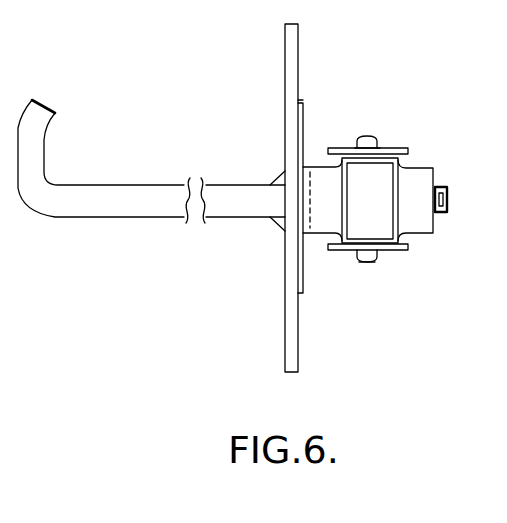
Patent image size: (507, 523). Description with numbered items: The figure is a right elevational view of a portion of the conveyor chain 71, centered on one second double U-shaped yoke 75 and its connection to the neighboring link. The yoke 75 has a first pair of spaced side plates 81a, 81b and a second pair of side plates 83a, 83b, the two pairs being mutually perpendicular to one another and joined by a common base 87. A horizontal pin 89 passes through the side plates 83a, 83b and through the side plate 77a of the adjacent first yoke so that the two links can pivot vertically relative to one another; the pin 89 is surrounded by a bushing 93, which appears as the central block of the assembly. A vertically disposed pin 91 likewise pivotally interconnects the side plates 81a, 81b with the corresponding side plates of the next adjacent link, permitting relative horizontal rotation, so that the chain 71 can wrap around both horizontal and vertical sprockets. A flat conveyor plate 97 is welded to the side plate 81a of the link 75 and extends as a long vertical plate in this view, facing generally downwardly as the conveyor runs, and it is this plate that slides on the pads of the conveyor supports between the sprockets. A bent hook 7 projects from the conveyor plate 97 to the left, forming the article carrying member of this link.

The hook 7 is at (56, 113).
The conveyor plate 97 is at (284, 371).
The side plate 81a is at (306, 265).
The side plate 77a is at (305, 103).
The common base 87 is at (415, 210).
The bushing 93 is at (370, 200).
The second double U-shaped yoke 75 is at (398, 143).
The side plate 83a is at (383, 101).
The horizontal pin 89 is at (372, 140).
The side plate 83b is at (400, 252).
The chain 71 is at (362, 270).
The side plate 81b is at (438, 186).
The vertically disposed pin 91 is at (442, 213).